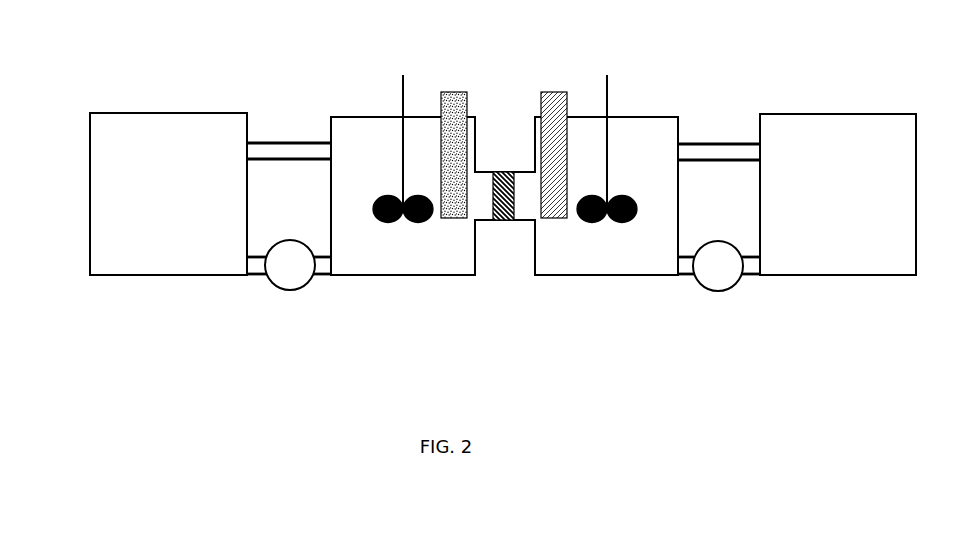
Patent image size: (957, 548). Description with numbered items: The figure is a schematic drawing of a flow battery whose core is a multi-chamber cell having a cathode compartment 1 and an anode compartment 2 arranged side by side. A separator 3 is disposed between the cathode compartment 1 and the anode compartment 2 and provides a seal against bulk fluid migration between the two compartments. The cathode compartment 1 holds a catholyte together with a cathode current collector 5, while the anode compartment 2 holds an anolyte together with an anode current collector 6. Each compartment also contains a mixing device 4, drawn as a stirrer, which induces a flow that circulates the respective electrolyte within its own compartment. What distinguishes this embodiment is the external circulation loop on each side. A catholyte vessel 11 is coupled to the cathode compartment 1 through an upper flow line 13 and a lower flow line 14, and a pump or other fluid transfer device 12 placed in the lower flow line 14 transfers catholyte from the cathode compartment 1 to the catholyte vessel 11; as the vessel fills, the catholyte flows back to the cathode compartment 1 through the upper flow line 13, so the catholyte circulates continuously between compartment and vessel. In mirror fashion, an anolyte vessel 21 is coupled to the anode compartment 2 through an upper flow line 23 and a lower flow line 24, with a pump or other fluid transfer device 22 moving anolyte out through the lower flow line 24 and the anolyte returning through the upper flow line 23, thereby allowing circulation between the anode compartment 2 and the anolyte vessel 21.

The cathode compartment 1 is at (390, 270).
The anode compartment 2 is at (641, 265).
The separator 3 is at (503, 222).
The mixing device 4 is at (376, 197).
The cathode current collector 5 is at (454, 92).
The anode current collector 6 is at (556, 92).
The catholyte vessel 11 is at (122, 277).
The pump or other fluid transfer device 12 is at (272, 287).
The upper flow line 13 is at (303, 160).
The lower flow line 14 is at (322, 277).
The anolyte vessel 21 is at (849, 278).
The pump or other fluid transfer device 22 is at (719, 293).
The upper flow line 23 is at (707, 162).
The lower flow line 24 is at (752, 277).